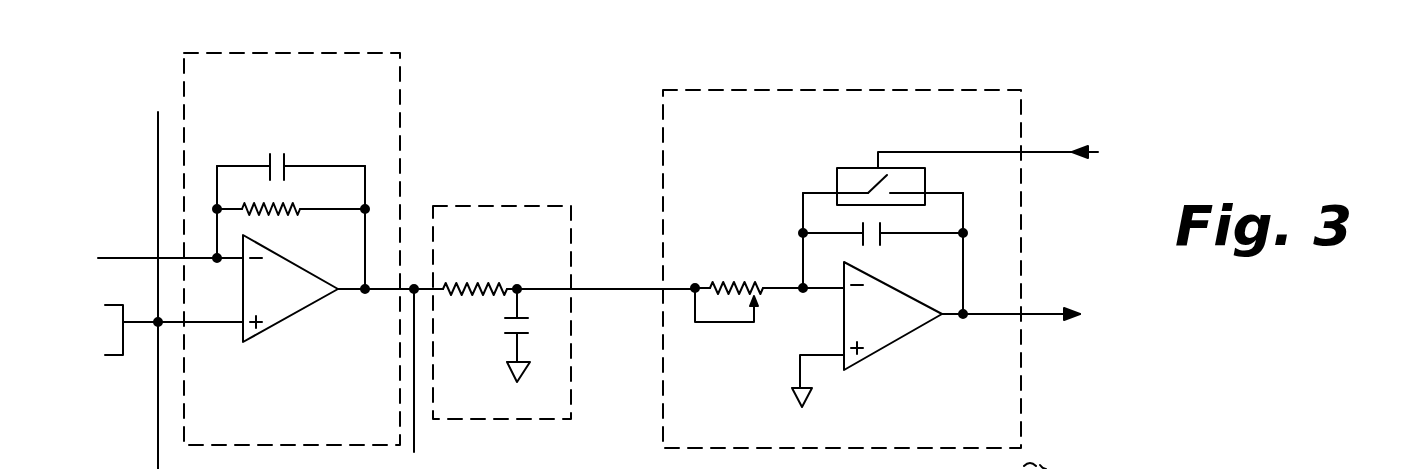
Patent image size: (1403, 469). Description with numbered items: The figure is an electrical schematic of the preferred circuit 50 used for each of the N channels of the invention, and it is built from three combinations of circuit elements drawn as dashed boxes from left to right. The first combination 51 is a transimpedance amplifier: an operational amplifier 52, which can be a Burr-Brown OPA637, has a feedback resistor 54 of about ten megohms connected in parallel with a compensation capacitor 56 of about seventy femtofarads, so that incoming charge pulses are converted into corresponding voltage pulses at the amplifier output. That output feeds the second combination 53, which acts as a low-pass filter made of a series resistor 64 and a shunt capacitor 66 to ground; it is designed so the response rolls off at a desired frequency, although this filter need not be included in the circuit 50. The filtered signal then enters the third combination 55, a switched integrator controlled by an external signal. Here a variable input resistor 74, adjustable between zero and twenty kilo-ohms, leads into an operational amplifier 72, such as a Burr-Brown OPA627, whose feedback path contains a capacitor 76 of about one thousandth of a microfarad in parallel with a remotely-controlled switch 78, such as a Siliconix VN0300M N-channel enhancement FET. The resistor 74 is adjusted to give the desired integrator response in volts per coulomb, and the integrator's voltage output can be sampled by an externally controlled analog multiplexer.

The circuit 50 is at (628, 95).
The first combination 51 is at (318, 53).
The operational amplifier 52 is at (273, 327).
The second combination 53 is at (498, 420).
The feedback resistor 54 is at (288, 212).
The third combination 55 is at (985, 88).
The compensation capacitor 56 is at (286, 165).
The resistor 64 is at (483, 283).
The capacitor 66 is at (513, 335).
The operational amplifier 72 is at (890, 345).
The variable input resistor 74 is at (750, 283).
The capacitor 76 is at (880, 245).
The remotely-controlled switch 78 is at (848, 167).